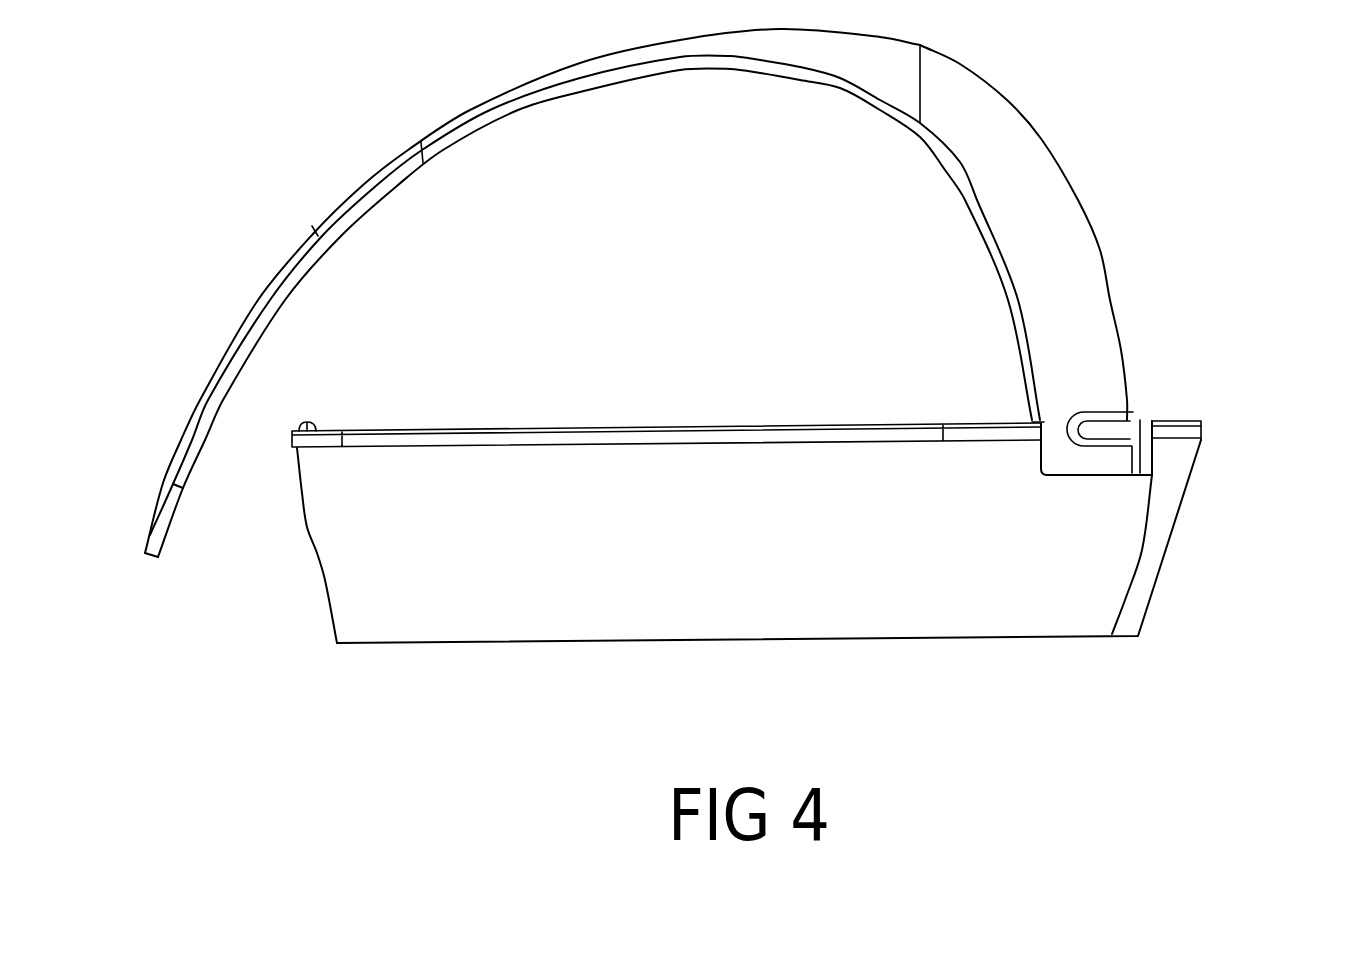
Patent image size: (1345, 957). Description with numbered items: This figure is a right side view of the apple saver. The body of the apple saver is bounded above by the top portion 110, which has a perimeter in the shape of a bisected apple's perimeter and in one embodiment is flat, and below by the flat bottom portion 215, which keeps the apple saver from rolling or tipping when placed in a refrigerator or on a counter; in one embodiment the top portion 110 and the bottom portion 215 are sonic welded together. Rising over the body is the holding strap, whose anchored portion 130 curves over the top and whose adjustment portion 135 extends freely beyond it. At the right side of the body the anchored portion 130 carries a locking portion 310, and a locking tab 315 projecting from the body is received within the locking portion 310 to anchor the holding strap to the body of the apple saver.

The top portion 110 is at (488, 437).
The anchored portion of the holding strap 130 is at (1072, 253).
The adjustment portion of the holding strap 135 is at (223, 362).
The flat bottom portion 215 is at (1043, 637).
The locking portion 310 is at (1056, 445).
The locking tab 315 is at (1117, 437).